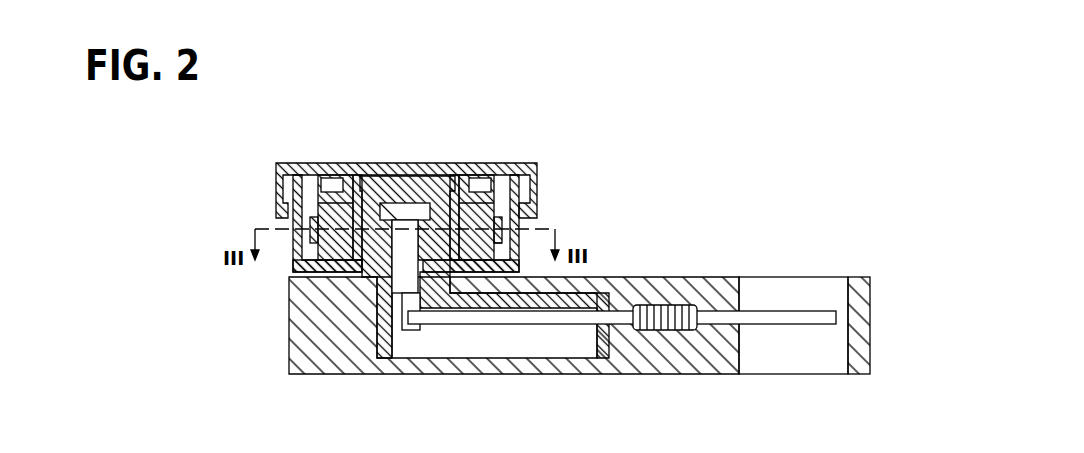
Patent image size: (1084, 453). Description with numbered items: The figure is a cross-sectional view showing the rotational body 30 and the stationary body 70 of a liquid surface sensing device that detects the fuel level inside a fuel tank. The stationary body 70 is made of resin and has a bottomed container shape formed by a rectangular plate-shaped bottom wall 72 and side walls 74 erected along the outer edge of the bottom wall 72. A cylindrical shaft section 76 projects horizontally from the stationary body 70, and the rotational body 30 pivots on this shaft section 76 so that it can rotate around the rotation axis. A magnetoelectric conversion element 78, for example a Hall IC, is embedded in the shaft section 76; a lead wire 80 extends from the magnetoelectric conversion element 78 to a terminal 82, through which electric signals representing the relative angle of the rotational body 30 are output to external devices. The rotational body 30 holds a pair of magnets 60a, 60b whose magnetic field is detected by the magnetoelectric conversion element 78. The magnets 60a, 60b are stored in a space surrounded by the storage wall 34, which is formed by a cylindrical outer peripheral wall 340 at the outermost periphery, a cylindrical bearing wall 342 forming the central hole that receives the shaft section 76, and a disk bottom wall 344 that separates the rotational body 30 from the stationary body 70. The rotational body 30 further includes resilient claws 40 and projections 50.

The rotational body 30 is at (547, 173).
The stationary body 70 is at (779, 265).
The storage wall 34 is at (344, 215).
The outer peripheral wall 340 is at (297, 222).
The bearing wall 342 is at (357, 185).
The disk bottom wall 344 is at (337, 280).
The resilient claws 40 is at (314, 222).
The magnet 60a is at (462, 200).
The magnet 60b is at (331, 196).
The side walls 74 is at (428, 233).
The shaft section 76 is at (405, 232).
The magnetoelectric conversion element 78 is at (400, 284).
The lead wire 80 is at (413, 295).
The terminal 82 is at (508, 322).
The bottom wall 72 is at (546, 296).
The projections 50 is at (500, 221).